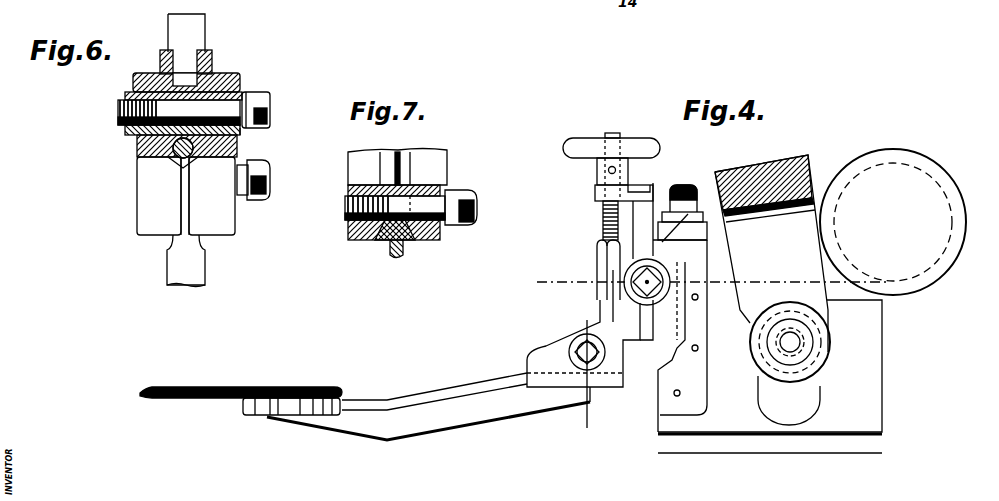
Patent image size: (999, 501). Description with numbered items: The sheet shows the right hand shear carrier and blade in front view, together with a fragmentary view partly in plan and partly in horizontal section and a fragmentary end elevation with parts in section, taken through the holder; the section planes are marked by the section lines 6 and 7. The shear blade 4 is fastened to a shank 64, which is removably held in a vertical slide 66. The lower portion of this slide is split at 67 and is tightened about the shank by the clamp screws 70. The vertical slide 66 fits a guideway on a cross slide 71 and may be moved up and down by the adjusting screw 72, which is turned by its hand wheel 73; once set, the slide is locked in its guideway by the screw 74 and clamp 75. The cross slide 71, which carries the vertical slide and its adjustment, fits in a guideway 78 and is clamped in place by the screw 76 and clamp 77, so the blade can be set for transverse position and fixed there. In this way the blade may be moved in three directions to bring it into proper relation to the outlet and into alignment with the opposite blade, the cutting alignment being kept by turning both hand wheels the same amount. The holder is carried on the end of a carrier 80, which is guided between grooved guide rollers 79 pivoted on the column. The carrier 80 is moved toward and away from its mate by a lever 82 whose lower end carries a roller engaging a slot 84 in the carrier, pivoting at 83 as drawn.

In FIG. 4, the shear blade 4 is at (216, 396).
In FIG. 4, the section line 6- 6 is at (707, 281).
In FIG. 4, the section line 7- 7 is at (581, 375).
In FIG. 6, the shank 64 is at (205, 262).
In FIG. 7, the shank 64 is at (392, 246).
In FIG. 4, the shank 64 is at (485, 423).
In FIG. 6, the vertical slide 66 is at (139, 150).
In FIG. 7, the vertical slide 66 is at (356, 180).
In FIG. 4, the vertical slide 66 is at (600, 311).
In FIG. 6, the split 67 is at (181, 243).
In FIG. 7, the split 67 is at (401, 153).
In FIG. 6, the clamp screw 70 is at (269, 190).
In FIG. 7, the clamp screw 70 is at (478, 207).
In FIG. 4, the clamp screw 70 is at (548, 350).
In FIG. 6, the cross slide 71 is at (244, 131).
In FIG. 4, the cross slide 71 is at (656, 364).
In FIG. 6, the adjusting screw 72 is at (178, 162).
In FIG. 4, the adjusting screw 72 is at (600, 215).
In FIG. 4, the hand wheel 73 is at (592, 129).
In FIG. 6, the screw 74 is at (266, 109).
In FIG. 4, the screw 74 is at (632, 278).
In FIG. 6, the clamp 75 is at (121, 124).
In FIG. 4, the screw 76 is at (677, 192).
In FIG. 4, the clamp 77 is at (720, 180).
In FIG. 4, the guideway 78 is at (676, 313).
In FIG. 4, the grooved guide roller 79 is at (917, 151).
In FIG. 4, the carrier 80 is at (880, 426).
In FIG. 4, the lever 82 is at (806, 159).
In FIG. 4, the pivot bearing 83 is at (808, 354).
In FIG. 4, the slot 84 is at (817, 407).